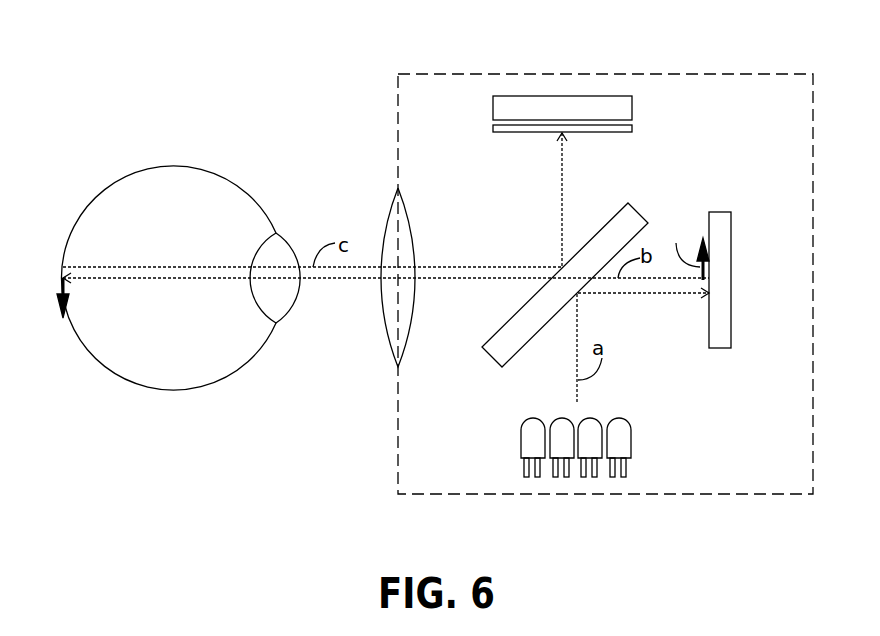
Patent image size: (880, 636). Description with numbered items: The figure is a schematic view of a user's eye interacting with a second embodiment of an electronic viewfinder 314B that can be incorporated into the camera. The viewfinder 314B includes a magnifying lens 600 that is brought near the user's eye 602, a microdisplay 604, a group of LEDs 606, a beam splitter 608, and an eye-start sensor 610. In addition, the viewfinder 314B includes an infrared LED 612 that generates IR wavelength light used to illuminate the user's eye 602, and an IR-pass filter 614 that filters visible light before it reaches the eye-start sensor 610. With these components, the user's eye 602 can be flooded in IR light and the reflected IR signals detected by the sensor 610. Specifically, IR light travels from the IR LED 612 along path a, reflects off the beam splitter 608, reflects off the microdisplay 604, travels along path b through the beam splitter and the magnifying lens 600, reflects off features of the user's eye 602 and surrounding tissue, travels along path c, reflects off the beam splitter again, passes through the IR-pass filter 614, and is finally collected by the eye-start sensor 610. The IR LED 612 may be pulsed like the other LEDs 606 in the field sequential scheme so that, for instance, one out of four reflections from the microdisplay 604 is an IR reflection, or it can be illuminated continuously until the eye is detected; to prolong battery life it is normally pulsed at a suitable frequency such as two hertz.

The electronic viewfinder 314B is at (748, 75).
The magnifying lens 600 is at (412, 238).
The user's eye 602 is at (234, 148).
The microdisplay 604 is at (732, 230).
The LEDs 606 is at (633, 426).
The beam splitter 608 is at (613, 230).
The eye-start sensor 610 is at (633, 110).
The infrared LED 612 is at (615, 420).
The IR-pass filter 614 is at (507, 133).